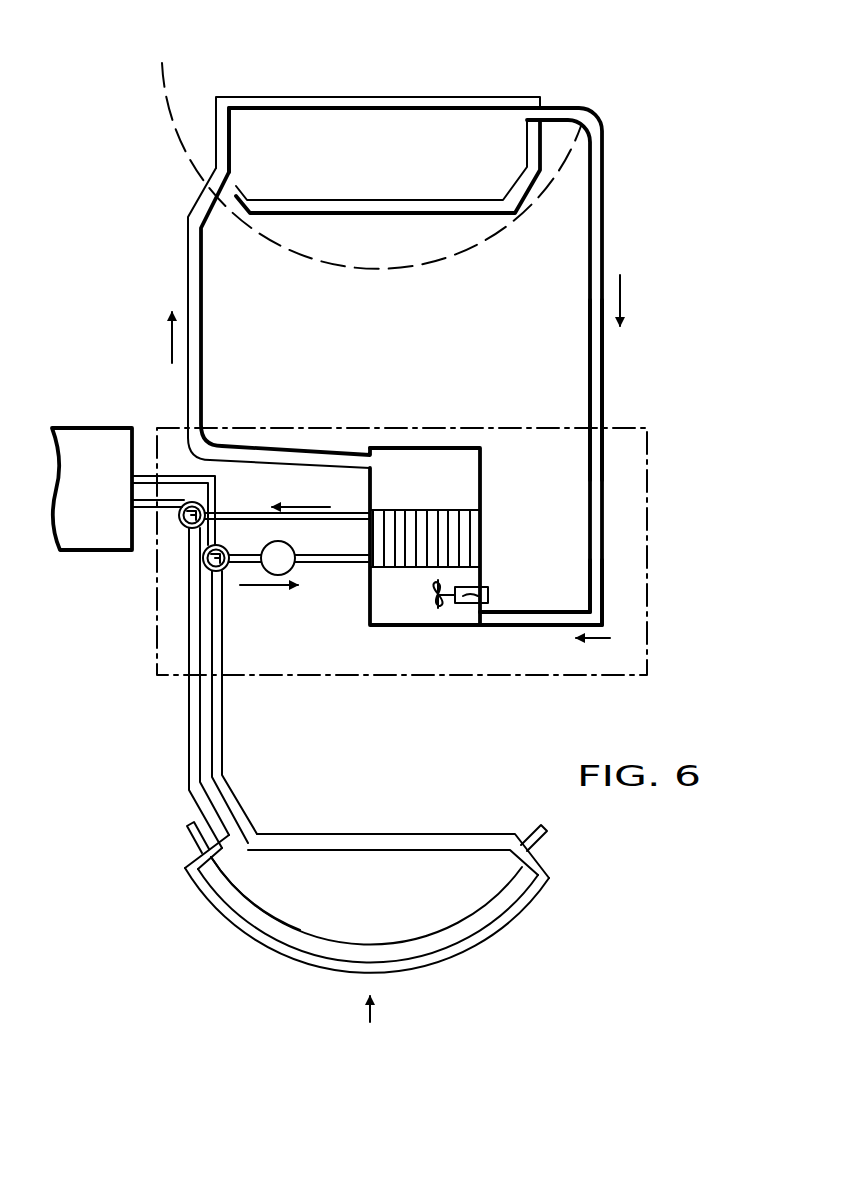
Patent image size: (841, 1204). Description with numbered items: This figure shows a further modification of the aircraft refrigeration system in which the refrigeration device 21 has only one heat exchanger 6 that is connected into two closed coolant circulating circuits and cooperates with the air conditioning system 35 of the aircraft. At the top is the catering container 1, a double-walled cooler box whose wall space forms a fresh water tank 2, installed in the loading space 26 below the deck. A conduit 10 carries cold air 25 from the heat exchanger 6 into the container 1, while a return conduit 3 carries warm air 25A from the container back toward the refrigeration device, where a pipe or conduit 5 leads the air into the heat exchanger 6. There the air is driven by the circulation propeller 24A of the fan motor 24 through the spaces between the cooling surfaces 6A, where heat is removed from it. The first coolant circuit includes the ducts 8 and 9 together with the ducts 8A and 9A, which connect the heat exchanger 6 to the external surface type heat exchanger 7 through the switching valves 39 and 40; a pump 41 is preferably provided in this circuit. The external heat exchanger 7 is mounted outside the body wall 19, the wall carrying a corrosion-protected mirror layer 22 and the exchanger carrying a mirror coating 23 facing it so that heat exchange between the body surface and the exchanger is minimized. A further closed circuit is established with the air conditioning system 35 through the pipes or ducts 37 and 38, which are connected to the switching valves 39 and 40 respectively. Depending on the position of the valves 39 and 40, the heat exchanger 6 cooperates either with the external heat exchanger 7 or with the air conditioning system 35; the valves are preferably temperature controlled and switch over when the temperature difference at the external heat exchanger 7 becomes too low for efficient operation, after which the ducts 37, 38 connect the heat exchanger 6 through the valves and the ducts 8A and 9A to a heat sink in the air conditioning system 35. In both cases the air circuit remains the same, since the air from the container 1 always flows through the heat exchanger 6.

The catering container 1 is at (277, 128).
The fresh water tank 2 is at (455, 96).
The return conduit 3 is at (602, 204).
The pipe or conduit 5 is at (533, 617).
The heat exchanger 6 is at (393, 612).
The cooling surfaces 6A is at (443, 530).
The surface type heat exchanger 7 is at (252, 937).
The pipe or conduit 8 is at (189, 722).
The duct 8A is at (228, 517).
The pipe or duct 9 is at (222, 713).
The duct 9A is at (322, 562).
The conduit 10 is at (203, 364).
The wall 19 is at (532, 833).
The refrigeration device 21 is at (440, 430).
The mirror layer or film 22 is at (187, 830).
The mirror coating 23 is at (203, 887).
The fan motor 24 is at (488, 595).
The circulation propeller 24A is at (438, 592).
The cold air 25 is at (190, 292).
The warm air 25A is at (602, 386).
The loading space 26 is at (387, 242).
The air conditioning system 35 is at (92, 537).
The pipe or duct 37 is at (148, 476).
The pipe or duct 38 is at (152, 508).
The switching valve 39 is at (218, 572).
The switching valve 40 is at (188, 502).
The pump 41 is at (278, 566).